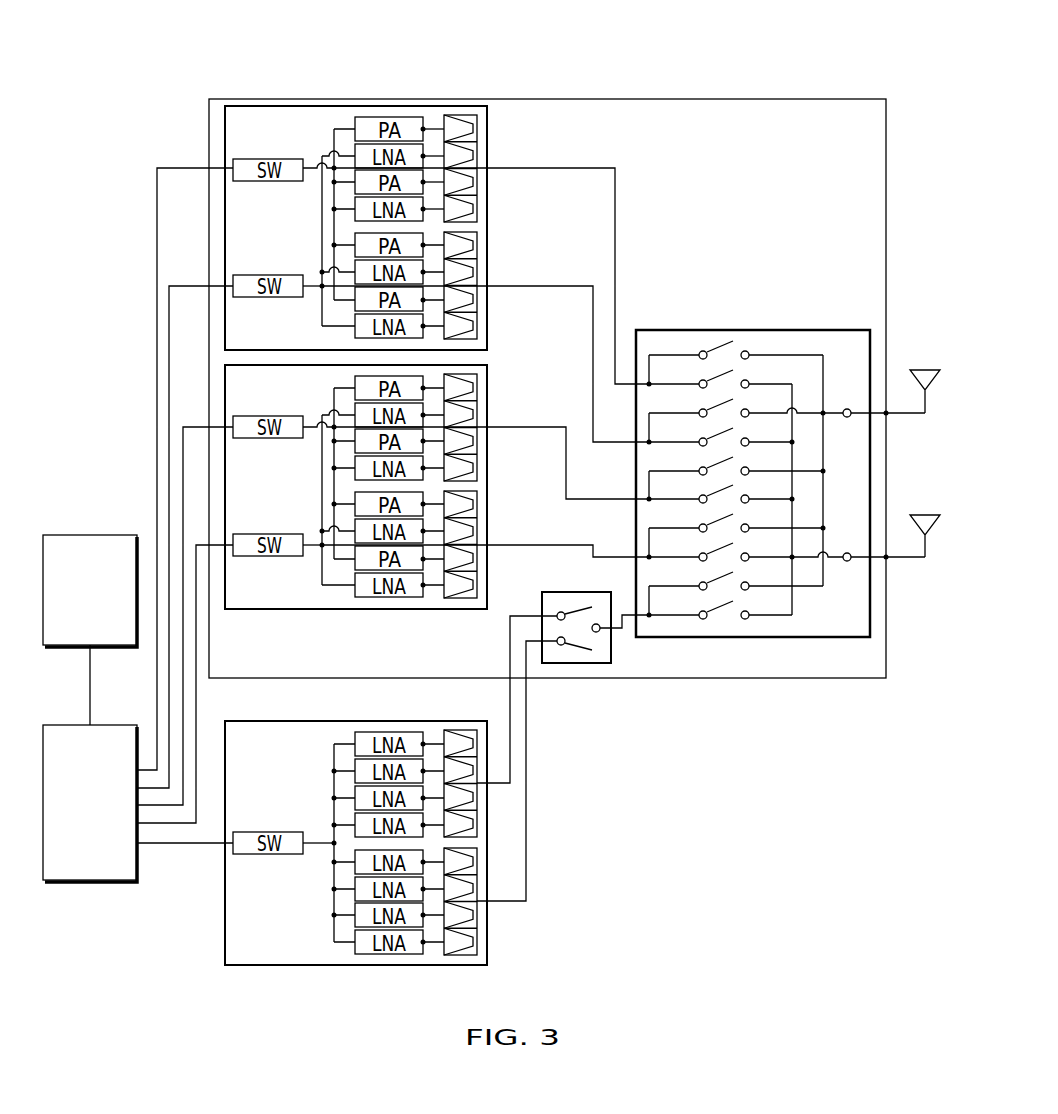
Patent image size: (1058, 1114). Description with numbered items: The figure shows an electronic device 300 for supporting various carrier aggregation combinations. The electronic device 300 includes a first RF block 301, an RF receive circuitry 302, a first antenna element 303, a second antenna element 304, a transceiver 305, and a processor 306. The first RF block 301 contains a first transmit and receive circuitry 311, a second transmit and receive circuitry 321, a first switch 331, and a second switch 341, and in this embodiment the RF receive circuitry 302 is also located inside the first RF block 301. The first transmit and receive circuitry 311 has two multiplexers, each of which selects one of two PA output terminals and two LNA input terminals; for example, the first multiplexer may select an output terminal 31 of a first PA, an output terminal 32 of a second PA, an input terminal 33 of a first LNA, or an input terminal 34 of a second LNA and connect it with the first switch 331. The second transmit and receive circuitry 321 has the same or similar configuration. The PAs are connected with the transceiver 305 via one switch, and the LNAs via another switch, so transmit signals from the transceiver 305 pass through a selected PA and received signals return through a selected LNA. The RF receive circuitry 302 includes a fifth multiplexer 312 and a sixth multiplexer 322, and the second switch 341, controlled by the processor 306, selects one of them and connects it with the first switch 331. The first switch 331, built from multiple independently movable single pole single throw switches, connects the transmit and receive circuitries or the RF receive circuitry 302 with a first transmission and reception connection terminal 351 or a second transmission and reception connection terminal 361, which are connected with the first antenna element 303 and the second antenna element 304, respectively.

The electronic device 300 is at (864, 56).
The first RF block 301 is at (886, 122).
The first transmit and receive circuitry 311 is at (487, 118).
The output terminal of first PA 31 is at (423, 127).
The output terminal of second PA 32 is at (425, 183).
The input terminal of first LNA 33 is at (422, 154).
The input terminal of second LNA 34 is at (425, 210).
The second transmit and receive circuitry 321 is at (487, 374).
The RF receive circuitry 302 is at (487, 930).
The fifth multiplexer 312 is at (478, 797).
The sixth multiplexer 322 is at (478, 885).
The first switch 331 is at (838, 330).
The second switch 341 is at (611, 652).
The first transmission and reception connection terminal 351 is at (887, 415).
The second transmission and reception connection terminal 361 is at (887, 559).
The first antenna element 303 is at (925, 370).
The second antenna element 304 is at (925, 515).
The transceiver 305 is at (118, 725).
The processor 306 is at (118, 535).